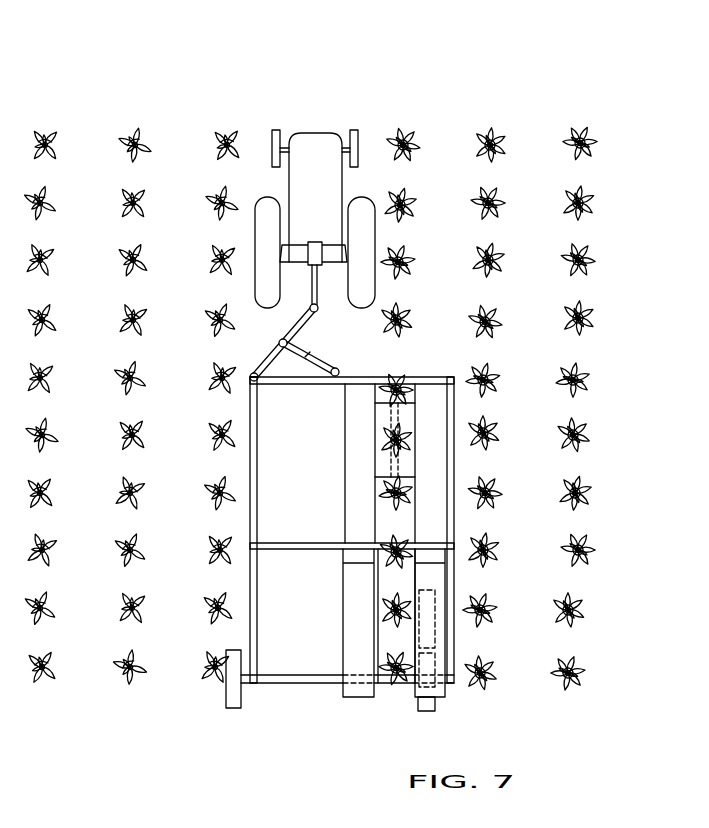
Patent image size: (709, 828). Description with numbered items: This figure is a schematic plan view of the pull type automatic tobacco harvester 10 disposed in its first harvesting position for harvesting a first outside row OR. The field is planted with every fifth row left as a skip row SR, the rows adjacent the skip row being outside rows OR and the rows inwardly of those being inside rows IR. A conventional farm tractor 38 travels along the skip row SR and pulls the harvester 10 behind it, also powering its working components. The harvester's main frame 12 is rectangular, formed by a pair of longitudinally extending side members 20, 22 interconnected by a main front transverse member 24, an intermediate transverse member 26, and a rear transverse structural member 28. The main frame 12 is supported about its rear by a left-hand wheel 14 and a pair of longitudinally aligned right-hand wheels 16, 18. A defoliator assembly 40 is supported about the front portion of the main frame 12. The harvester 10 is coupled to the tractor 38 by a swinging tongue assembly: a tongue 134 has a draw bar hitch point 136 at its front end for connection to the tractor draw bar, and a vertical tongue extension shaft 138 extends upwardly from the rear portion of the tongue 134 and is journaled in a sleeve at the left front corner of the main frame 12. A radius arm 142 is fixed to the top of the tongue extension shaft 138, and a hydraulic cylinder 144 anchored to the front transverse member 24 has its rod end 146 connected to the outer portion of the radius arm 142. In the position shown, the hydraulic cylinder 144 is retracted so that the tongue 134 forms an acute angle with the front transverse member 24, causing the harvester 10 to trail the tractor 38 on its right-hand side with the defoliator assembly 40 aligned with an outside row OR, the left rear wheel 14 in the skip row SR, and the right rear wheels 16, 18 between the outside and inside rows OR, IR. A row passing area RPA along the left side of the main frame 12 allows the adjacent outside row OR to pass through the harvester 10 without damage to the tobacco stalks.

The pull type automatic tobacco harvester 10 is at (393, 537).
The main frame 12 is at (243, 463).
The left-hand wheel 14 is at (233, 708).
The right-hand wheel 16 is at (430, 640).
The right-hand wheel 18 is at (432, 662).
The side member 20 is at (250, 572).
The side member 22 is at (454, 573).
The main front transverse member 24 is at (428, 380).
The intermediate transverse member 26 is at (330, 549).
The rear transverse structural member 28 is at (314, 683).
The farm tractor 38 is at (328, 143).
The defoliator assembly 40 is at (385, 458).
The tongue 134 is at (293, 323).
The draw bar hitch point 136 is at (318, 312).
The vertical tongue extension shaft 138 is at (250, 386).
The radius arm 142 is at (262, 357).
The hydraulic cylinder 144 is at (328, 352).
The rod end 146 is at (287, 345).
The inside rows IR is at (120, 132).
The outside rows OR is at (228, 128).
The skip row SR is at (307, 120).
The row passing area RPA is at (273, 503).